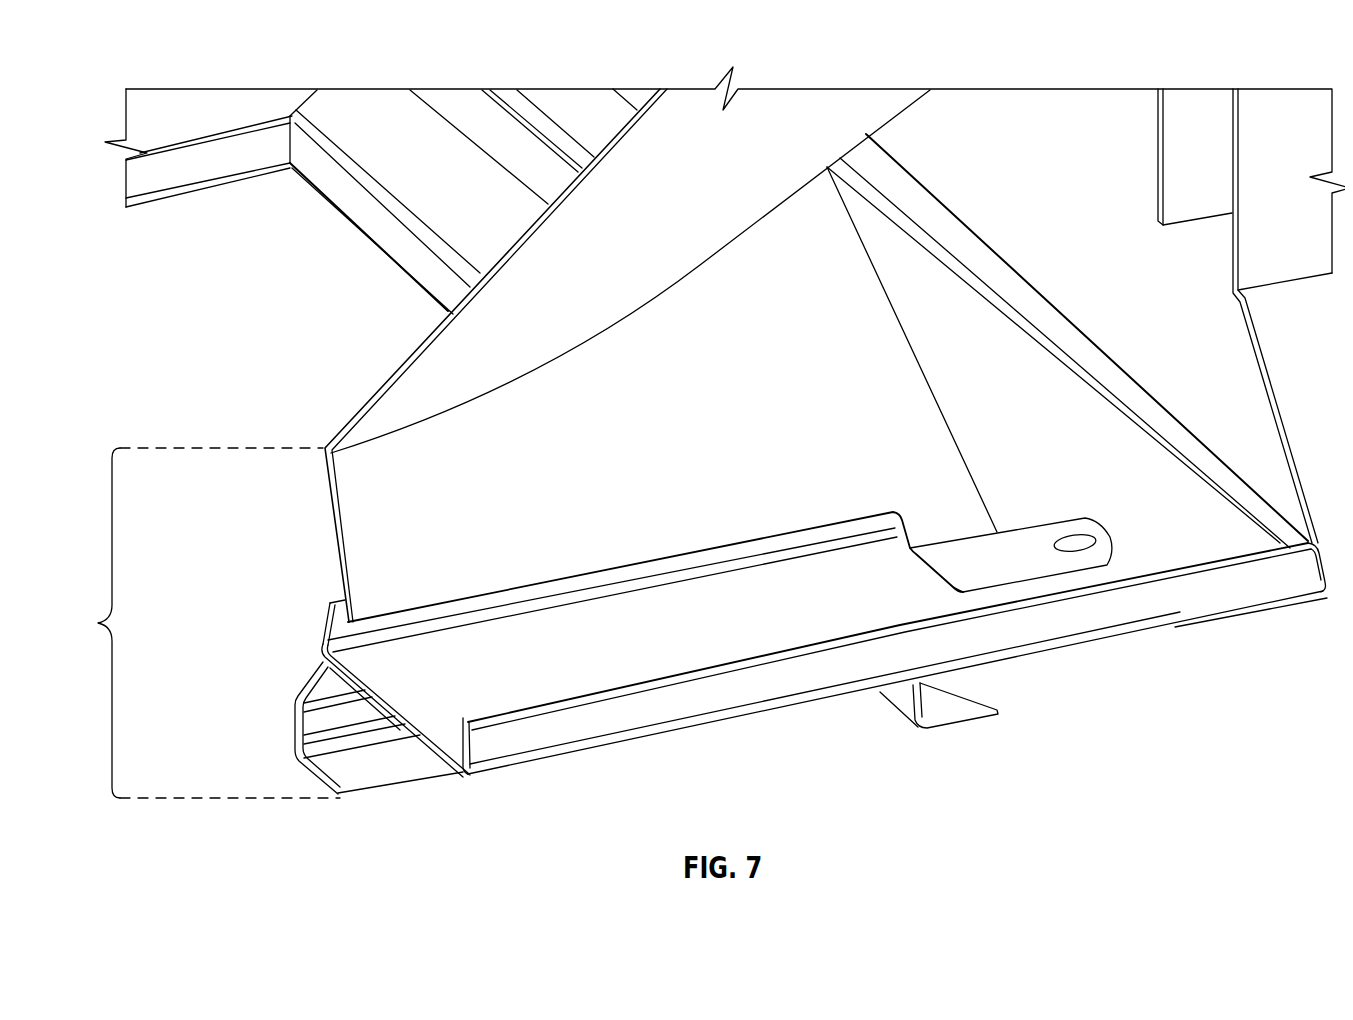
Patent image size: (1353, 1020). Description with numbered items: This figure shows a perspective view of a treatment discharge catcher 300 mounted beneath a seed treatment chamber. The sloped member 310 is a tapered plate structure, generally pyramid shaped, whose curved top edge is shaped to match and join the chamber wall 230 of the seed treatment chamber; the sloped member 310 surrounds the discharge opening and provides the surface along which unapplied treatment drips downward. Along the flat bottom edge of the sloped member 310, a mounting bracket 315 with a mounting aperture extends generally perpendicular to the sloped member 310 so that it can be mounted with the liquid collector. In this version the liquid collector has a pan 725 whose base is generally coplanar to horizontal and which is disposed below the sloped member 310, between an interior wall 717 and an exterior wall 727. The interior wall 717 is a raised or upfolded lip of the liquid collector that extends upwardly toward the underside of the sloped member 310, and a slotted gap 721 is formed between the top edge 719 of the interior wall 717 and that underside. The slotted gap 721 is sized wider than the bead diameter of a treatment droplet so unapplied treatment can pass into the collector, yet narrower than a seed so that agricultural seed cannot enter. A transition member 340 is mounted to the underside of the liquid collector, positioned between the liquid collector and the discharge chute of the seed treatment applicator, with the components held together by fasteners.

The chamber wall 230 is at (681, 204).
The sloped member 310 is at (606, 461).
The mounting bracket 315 is at (1085, 518).
The treatment discharge catcher 300 is at (196, 623).
The transition member 340 is at (302, 692).
The interior wall 717 is at (322, 643).
The top edge 719 is at (331, 605).
The slotted gap 721 is at (330, 592).
The pan 725 is at (685, 654).
The exterior wall 727 is at (463, 730).